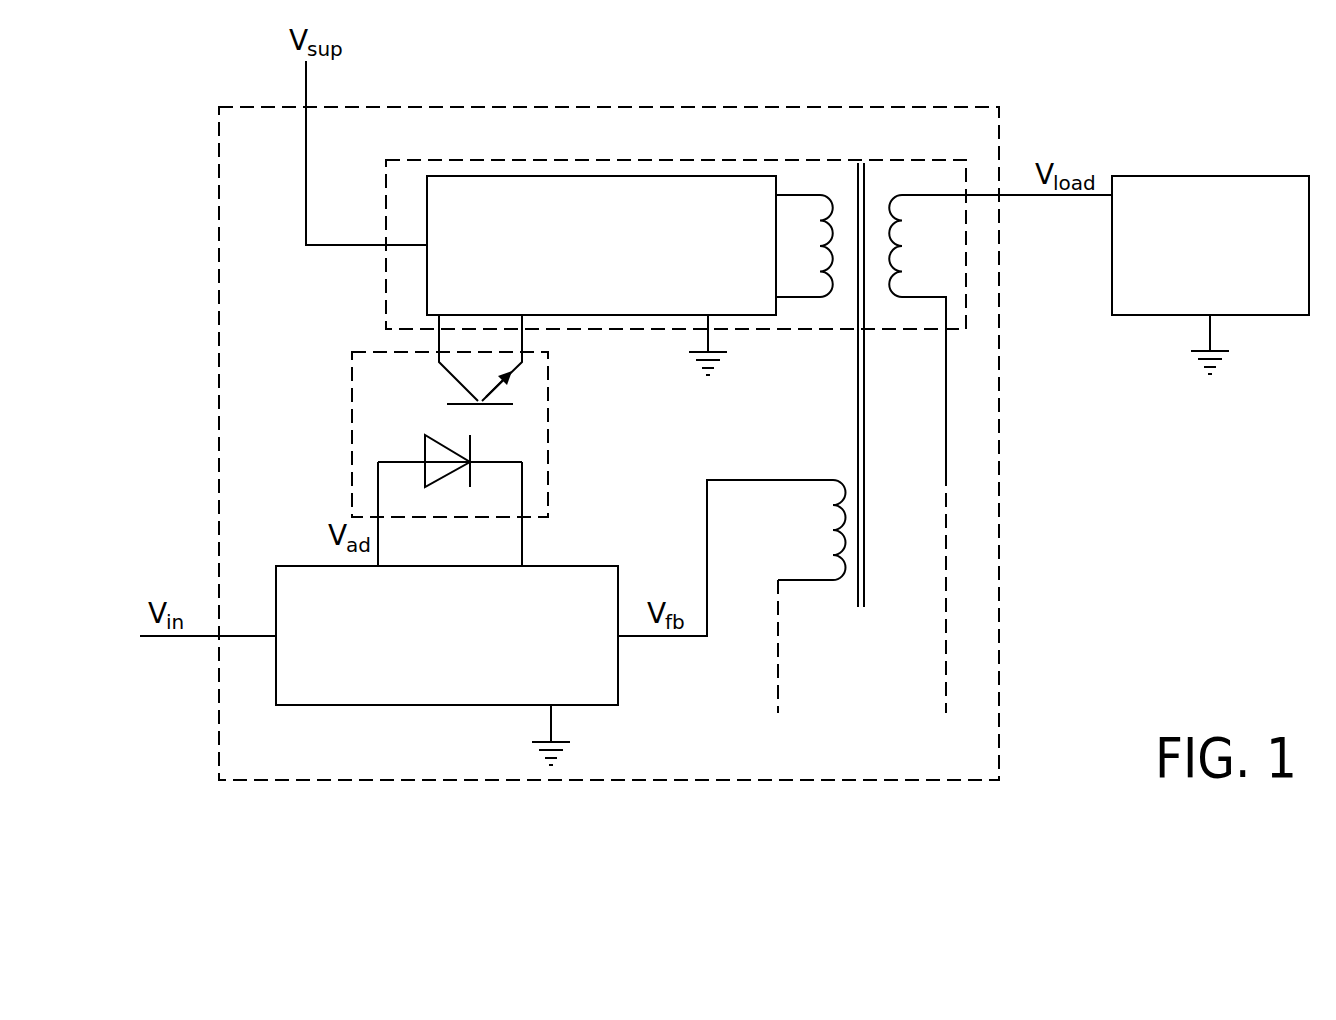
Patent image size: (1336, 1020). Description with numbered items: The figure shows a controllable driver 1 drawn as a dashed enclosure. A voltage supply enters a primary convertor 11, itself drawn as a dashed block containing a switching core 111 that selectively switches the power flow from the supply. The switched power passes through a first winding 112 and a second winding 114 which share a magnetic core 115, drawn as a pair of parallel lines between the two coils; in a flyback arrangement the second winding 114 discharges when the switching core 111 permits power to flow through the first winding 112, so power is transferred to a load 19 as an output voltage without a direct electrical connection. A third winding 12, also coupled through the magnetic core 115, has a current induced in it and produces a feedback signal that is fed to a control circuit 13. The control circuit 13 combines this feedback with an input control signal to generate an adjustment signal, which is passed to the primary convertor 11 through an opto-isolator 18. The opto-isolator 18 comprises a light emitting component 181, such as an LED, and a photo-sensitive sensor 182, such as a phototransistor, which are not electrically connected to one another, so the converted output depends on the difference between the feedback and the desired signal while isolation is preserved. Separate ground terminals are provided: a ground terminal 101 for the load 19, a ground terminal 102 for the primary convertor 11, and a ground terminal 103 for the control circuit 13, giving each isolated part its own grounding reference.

The controllable driver 1 is at (218, 175).
The primary convertor 11 is at (385, 176).
The switching core 111 is at (622, 259).
The first winding 112 is at (820, 194).
The second winding 114 is at (901, 194).
The magnetic core 115 is at (861, 162).
The third winding 12 is at (831, 479).
The control circuit 13 is at (461, 651).
The opto-isolator 18 is at (351, 374).
The light emitting component 181 is at (437, 434).
The photo-sensitive sensor 182 is at (512, 392).
The load 19 is at (1224, 261).
The ground terminal 101 is at (1230, 356).
The ground terminal 102 is at (728, 355).
The ground terminal 103 is at (572, 746).